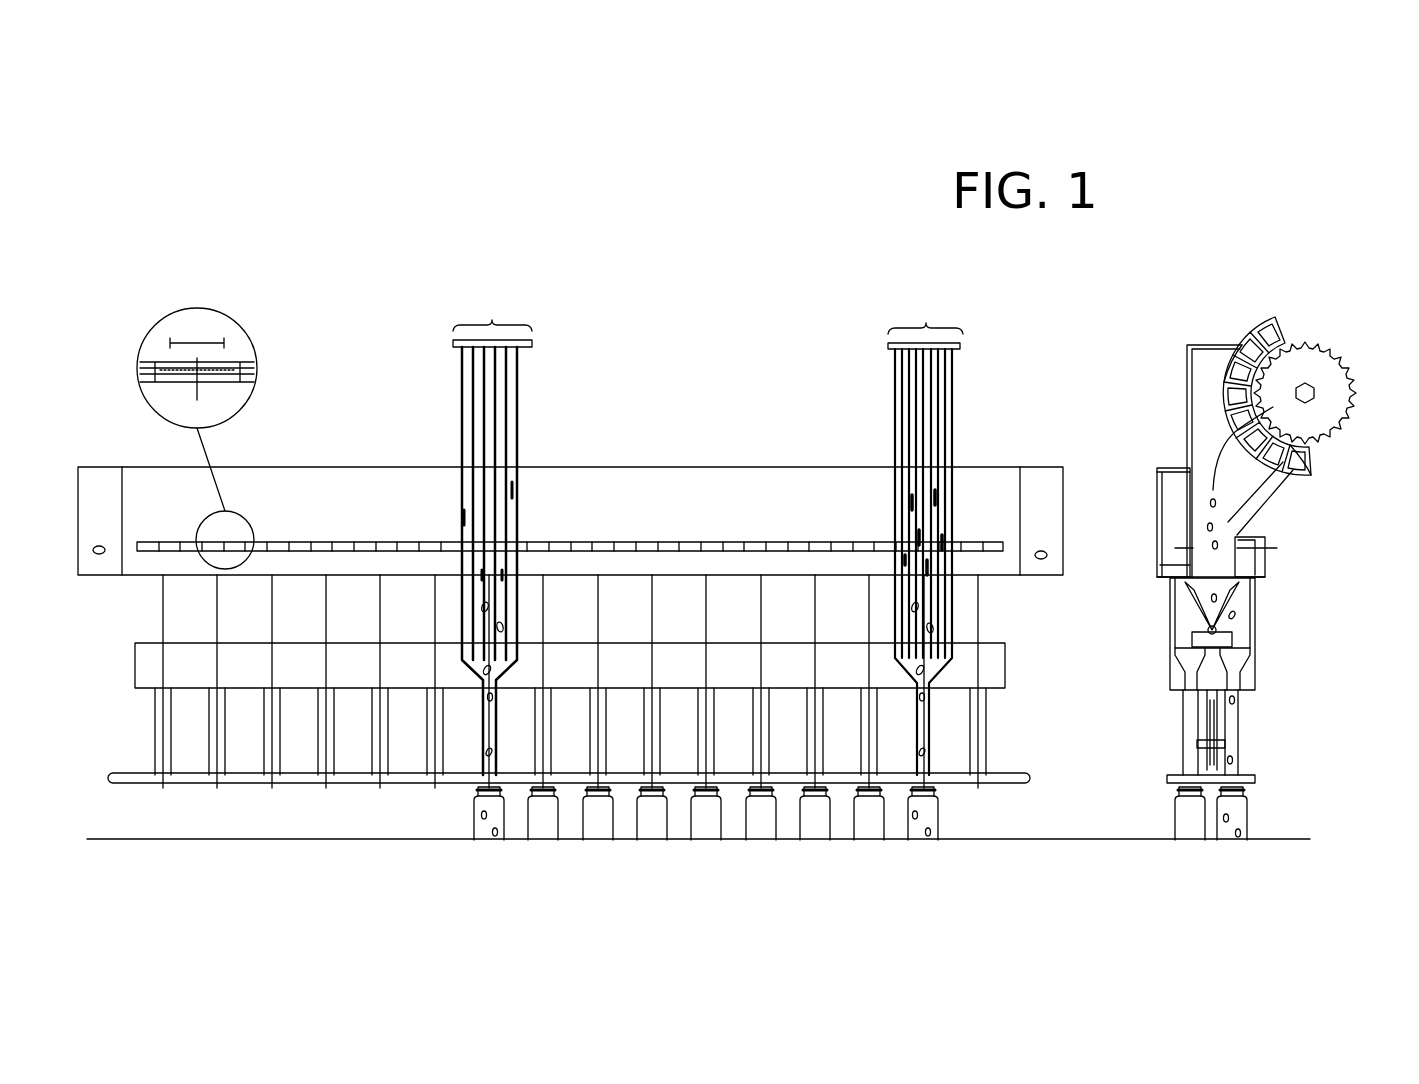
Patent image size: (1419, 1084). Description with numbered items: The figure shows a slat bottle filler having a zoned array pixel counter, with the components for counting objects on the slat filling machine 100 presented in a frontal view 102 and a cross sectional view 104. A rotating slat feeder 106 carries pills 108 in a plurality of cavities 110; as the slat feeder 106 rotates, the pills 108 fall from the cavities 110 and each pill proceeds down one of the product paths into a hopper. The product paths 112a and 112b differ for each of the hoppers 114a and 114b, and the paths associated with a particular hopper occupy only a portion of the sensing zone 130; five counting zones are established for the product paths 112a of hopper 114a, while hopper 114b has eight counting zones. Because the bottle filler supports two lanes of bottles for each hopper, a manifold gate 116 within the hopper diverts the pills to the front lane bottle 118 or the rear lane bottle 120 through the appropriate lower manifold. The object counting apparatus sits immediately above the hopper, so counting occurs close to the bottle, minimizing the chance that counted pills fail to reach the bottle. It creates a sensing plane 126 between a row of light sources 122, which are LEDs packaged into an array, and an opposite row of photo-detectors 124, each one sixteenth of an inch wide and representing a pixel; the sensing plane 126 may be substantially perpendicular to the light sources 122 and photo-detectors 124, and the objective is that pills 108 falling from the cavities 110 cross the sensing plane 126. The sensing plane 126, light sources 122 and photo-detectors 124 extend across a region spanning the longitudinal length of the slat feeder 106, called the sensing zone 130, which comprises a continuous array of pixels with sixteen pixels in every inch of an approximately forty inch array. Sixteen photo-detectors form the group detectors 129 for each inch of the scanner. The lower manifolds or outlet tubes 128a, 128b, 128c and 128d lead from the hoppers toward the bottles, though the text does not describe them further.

The slat filling machine 100 is at (810, 262).
The frontal view 102 is at (1263, 310).
The cross sectional view 104 is at (648, 313).
The rotating slat feeder 106 is at (1347, 365).
The pills 108 is at (1245, 345).
The cavities 110 is at (1310, 447).
The product paths 112a is at (513, 393).
The product paths 112b is at (1217, 443).
The hopper 114a is at (460, 603).
The hopper 114b is at (952, 603).
The manifold gate 116 is at (1190, 615).
The front lane bottle 118 is at (938, 812).
The rear lane bottle 120 is at (1250, 800).
The light sources 122 is at (1267, 560).
The photo-detectors 124 is at (225, 387).
The sensing plane 126 is at (1167, 560).
The outlet tube 128a is at (1183, 732).
The outlet tube 128b is at (1238, 722).
The outlet tube 128c is at (478, 755).
The outlet tube 128d is at (932, 730).
The group detectors 129 is at (233, 362).
The sensing zone 130 is at (725, 480).